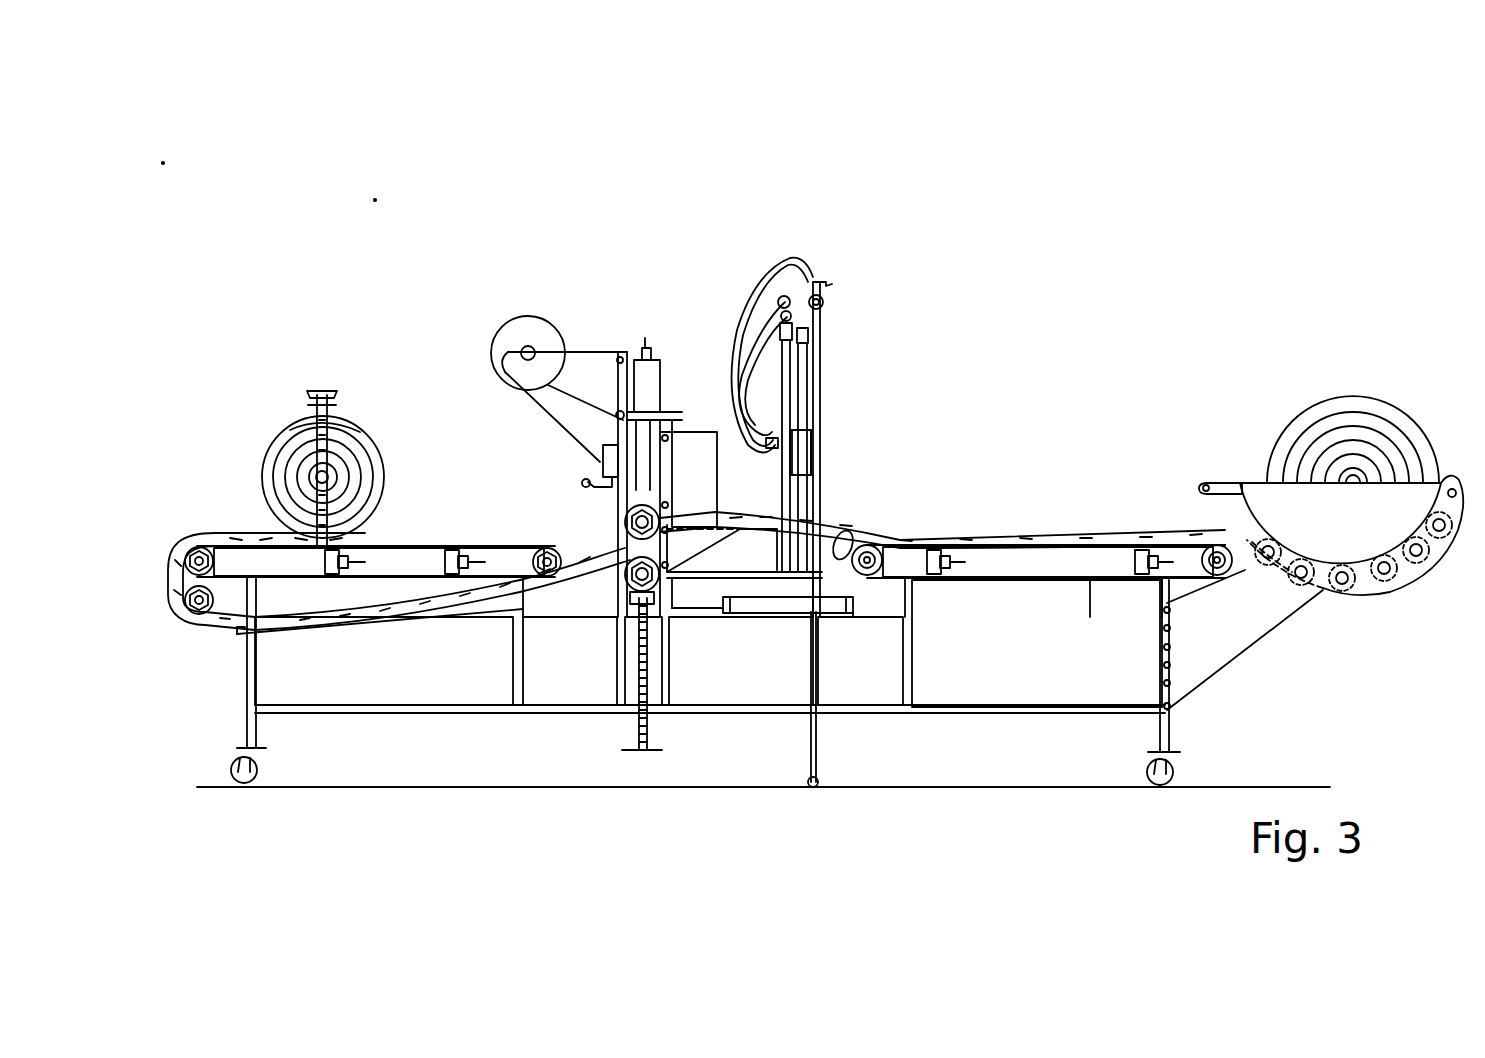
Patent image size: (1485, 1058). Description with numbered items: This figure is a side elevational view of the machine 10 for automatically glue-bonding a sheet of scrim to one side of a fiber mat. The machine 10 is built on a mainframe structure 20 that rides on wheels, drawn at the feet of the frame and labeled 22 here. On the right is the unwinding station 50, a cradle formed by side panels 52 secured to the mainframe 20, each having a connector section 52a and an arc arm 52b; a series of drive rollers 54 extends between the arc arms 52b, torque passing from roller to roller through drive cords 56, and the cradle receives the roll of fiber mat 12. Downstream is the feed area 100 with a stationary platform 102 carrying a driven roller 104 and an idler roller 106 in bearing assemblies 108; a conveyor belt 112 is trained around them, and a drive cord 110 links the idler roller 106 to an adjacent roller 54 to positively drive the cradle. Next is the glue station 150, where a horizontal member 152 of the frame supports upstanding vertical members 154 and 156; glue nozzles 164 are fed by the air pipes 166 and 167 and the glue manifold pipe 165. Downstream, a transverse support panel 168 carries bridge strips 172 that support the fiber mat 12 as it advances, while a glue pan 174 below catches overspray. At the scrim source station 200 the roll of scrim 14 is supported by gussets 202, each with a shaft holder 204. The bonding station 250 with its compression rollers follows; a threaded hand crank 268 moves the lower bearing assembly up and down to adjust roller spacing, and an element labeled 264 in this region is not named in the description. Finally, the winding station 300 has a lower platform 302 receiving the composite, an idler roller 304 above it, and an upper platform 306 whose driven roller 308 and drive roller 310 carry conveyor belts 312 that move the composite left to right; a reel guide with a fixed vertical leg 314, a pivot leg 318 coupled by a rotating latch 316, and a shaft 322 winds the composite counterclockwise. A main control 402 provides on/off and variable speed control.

The machine 10 is at (1080, 187).
The fiber mat 12 is at (372, 452).
The roll of scrim 14 is at (360, 430).
The mainframe structure 20 is at (447, 762).
The casters 22 is at (252, 786).
The unwinding station 50 is at (1325, 352).
The side panels 52 is at (1310, 590).
The connector section 52a is at (1232, 648).
The arc arm 52b is at (1447, 508).
The drive rollers 54 is at (1392, 582).
The drive cords 56 is at (1367, 588).
The feed area 100 is at (1040, 628).
The stationary platform 102 is at (985, 552).
The driven roller 104 is at (872, 572).
The idler roller 106 is at (1210, 545).
The bearing assemblies 108 is at (872, 548).
The drive cord 110 is at (1257, 565).
The conveyor belt 112 is at (1018, 580).
The glue station 150 is at (860, 278).
The horizontal member 152 is at (703, 575).
The vertical member 154 is at (785, 532).
The vertical member 156 is at (820, 545).
The glue nozzle 164 is at (812, 440).
The glue manifold pipe 165 is at (826, 304).
The air pipe 166 is at (790, 268).
The air pipe 167 is at (778, 300).
The transverse support panel 168 is at (725, 527).
The bridge strips 172 is at (850, 540).
The glue pan 174 is at (795, 612).
The scrim source station 200 is at (532, 285).
The gussets 202 is at (575, 368).
The shaft holder 204 is at (525, 350).
The bonding station 250 is at (597, 542).
The actuator 264 is at (655, 375).
The threaded hand crank 268 is at (632, 752).
The winding station 300 is at (292, 368).
The lower platform 302 is at (440, 628).
The idler roller 304 is at (225, 628).
The upper platform 306 is at (422, 548).
The driven roller 308 is at (538, 548).
The drive roller 310 is at (228, 535).
The conveyor belts 312 is at (395, 548).
The fixed vertical leg 314 is at (335, 405).
The rotating latch 316 is at (323, 390).
The pivot leg 318 is at (313, 408).
The shaft 322 is at (316, 474).
The main control 402 is at (694, 440).